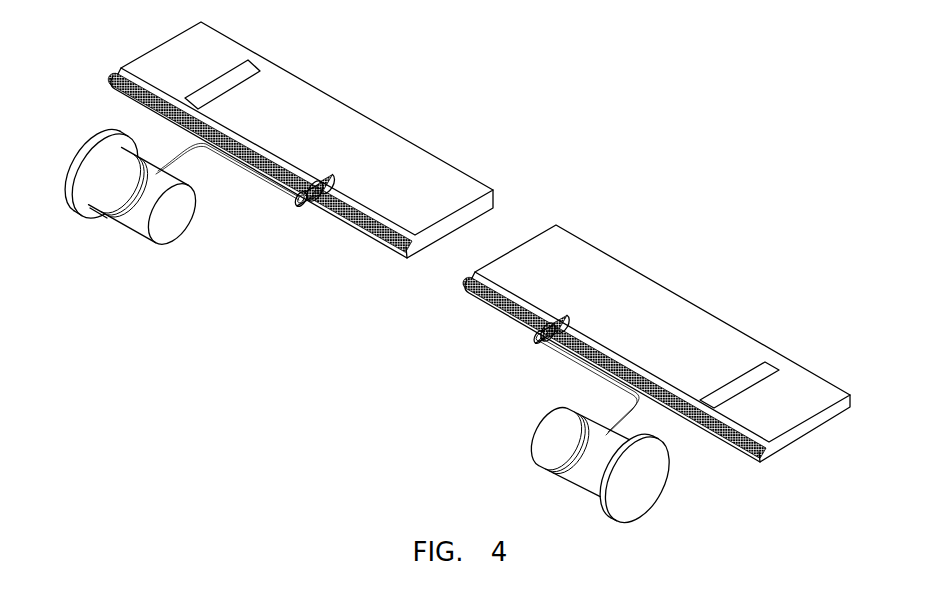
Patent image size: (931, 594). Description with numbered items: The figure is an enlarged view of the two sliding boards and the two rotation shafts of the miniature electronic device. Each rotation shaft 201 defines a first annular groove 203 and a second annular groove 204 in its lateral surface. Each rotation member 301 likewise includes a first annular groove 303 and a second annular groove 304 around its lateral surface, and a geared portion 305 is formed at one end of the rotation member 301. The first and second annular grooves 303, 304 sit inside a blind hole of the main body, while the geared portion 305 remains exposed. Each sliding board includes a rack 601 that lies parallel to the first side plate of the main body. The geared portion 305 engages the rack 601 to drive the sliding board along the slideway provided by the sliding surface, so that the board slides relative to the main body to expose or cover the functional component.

The rotation shaft 201 is at (89, 142).
The first annular groove 203 is at (114, 212).
The second annular groove 204 is at (133, 235).
The rotation member 301 is at (314, 185).
The first annular groove 303 is at (311, 206).
The second annular groove 304 is at (323, 214).
The geared portion 305 is at (329, 187).
The rack 601 is at (387, 232).